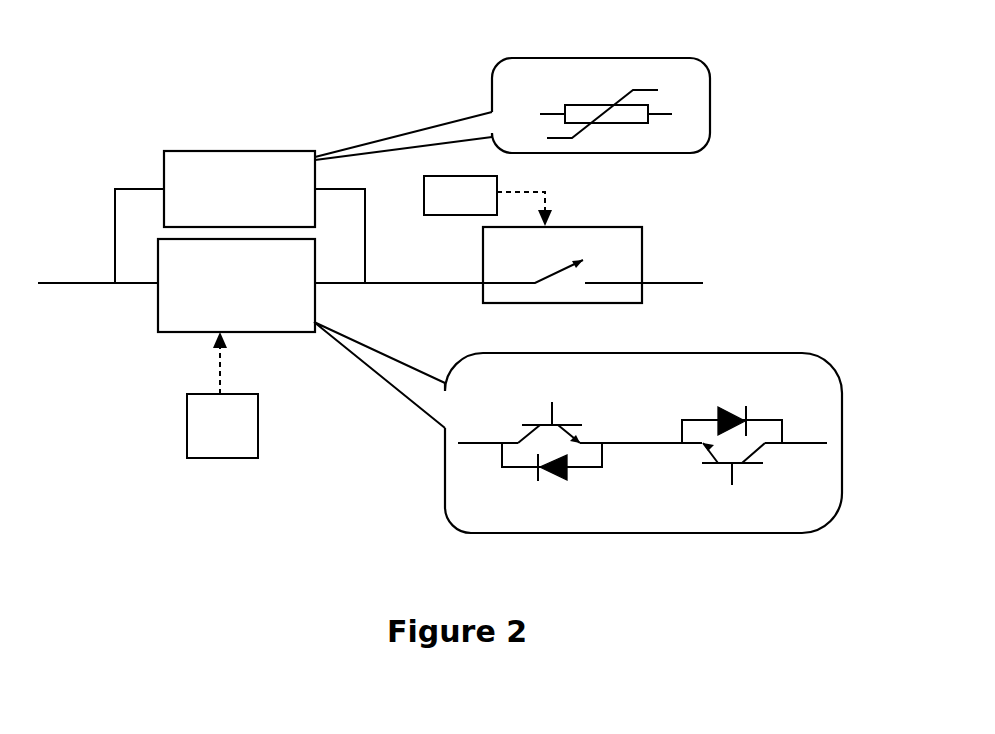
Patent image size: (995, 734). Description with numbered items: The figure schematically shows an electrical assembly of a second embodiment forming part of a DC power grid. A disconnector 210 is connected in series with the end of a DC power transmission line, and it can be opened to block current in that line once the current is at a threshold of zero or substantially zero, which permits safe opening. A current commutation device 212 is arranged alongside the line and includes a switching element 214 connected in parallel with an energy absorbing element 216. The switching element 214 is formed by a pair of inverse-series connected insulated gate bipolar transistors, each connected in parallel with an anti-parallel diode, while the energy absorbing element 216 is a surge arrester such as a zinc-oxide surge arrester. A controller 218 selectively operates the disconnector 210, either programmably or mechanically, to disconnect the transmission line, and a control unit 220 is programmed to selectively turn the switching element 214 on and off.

The disconnector 210 is at (622, 255).
The current commutation device 212 is at (132, 170).
The switching element 214 is at (500, 386).
The energy absorbing element 216 is at (437, 142).
The controller 218 is at (488, 201).
The control unit 220 is at (222, 395).